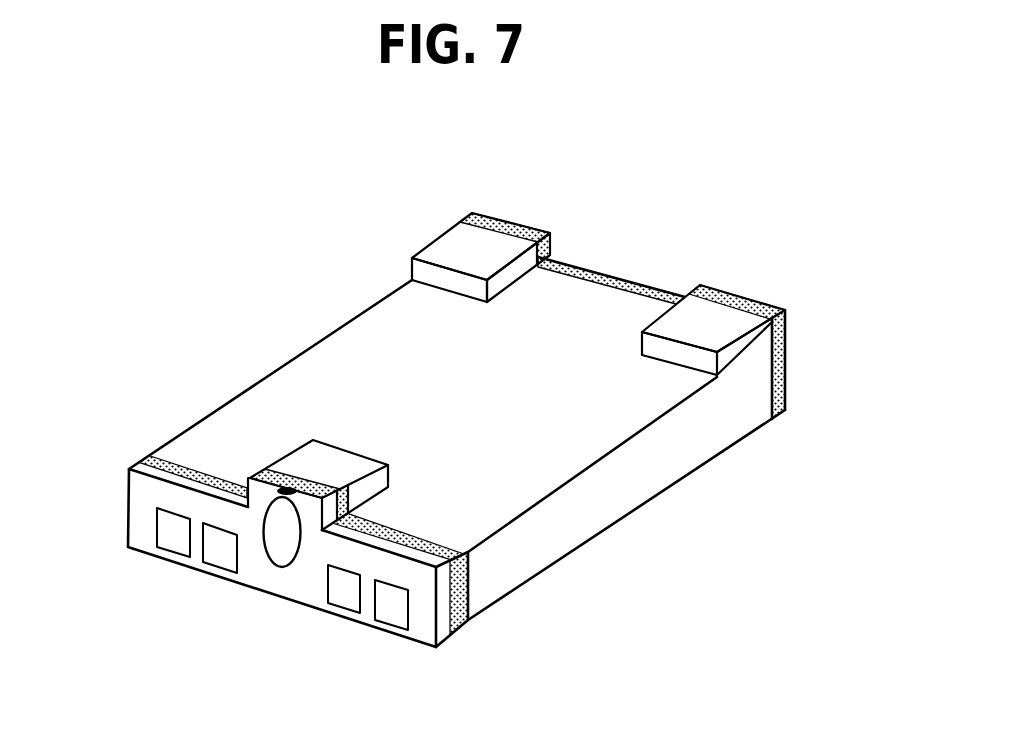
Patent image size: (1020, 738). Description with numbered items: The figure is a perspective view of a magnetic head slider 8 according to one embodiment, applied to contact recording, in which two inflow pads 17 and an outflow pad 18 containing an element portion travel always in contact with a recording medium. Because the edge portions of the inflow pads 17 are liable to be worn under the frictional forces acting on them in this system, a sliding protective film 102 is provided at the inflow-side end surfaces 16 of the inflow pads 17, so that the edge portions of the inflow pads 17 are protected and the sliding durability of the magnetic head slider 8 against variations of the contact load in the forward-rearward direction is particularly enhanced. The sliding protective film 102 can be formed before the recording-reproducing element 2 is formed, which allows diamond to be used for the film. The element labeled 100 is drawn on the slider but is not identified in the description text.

The recording-reproducing element 2 is at (284, 548).
The magnetic head slider 8 is at (510, 408).
The inflow-side end surfaces 16 is at (727, 288).
The inflow pads 17 is at (697, 327).
The outflow pad 18 is at (327, 458).
The frame 100 is at (258, 476).
The sliding protective film 102 is at (468, 214).